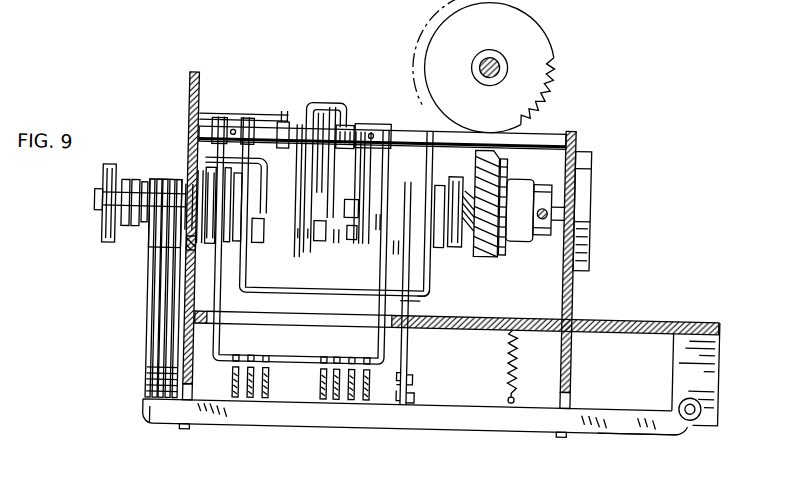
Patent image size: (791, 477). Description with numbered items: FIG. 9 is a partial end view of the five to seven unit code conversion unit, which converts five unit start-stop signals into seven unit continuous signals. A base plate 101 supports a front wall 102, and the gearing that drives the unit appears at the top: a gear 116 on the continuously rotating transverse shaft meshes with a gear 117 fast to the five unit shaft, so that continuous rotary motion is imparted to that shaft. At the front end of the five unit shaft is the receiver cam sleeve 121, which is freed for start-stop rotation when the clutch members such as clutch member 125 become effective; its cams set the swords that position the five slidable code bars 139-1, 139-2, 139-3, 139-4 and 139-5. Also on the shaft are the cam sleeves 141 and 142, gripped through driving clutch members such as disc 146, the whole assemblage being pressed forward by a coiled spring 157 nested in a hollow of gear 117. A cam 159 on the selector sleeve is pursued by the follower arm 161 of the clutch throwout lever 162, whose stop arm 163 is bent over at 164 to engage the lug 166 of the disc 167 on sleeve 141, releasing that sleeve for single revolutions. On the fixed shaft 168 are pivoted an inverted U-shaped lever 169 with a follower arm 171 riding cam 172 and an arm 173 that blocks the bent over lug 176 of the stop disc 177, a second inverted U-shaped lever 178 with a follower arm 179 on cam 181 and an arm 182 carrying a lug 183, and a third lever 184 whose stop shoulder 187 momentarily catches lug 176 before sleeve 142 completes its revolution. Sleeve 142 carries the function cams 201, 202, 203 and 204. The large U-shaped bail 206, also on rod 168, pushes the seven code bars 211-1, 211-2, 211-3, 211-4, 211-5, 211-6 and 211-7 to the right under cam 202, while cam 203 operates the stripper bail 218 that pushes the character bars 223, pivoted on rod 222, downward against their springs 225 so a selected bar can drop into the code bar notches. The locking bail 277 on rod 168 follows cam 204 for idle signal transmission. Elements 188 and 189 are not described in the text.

The base plate 101 is at (630, 311).
The front wall 102 is at (184, 90).
The gear 116 is at (548, 22).
The gear 117 is at (496, 257).
The receiver cam sleeve 121 is at (115, 165).
The clutch member 125 is at (94, 240).
The slidable code bar 139-1 is at (148, 329).
The slidable code bar 139-2 is at (156, 346).
The slidable code bar 139-3 is at (161, 364).
The slidable code bar 139-4 is at (167, 398).
The slidable code bar 139-5 is at (176, 398).
The cam sleeve 141 is at (301, 236).
The cam sleeve 142 is at (432, 254).
The driving clutch member 146 is at (457, 174).
The coiled spring 157 is at (460, 194).
The cam 159 is at (163, 243).
The follower arm 161 is at (188, 190).
The clutch throwout lever 162 is at (224, 112).
The stop arm 163 is at (283, 258).
The bent over portion 164 is at (257, 290).
The lug 166 is at (286, 246).
The disc 167 is at (305, 108).
The fixed shaft 168 is at (561, 125).
The inverted U-shaped lever 169 is at (325, 96).
The follower arm 171 is at (268, 185).
The cam 172 is at (318, 236).
The arm 173 is at (358, 170).
The bent over lug 176 is at (349, 236).
The stop disc 177 is at (374, 226).
The inverted U-shaped lever 178 is at (337, 106).
The follower arm 179 is at (311, 100).
The cam 181 is at (332, 240).
The arm 182 is at (341, 124).
The lug 183 is at (342, 196).
The third lever 184 is at (369, 125).
The stop shoulder 187 is at (439, 53).
The bearing 188 is at (276, 119).
The member 189 is at (350, 203).
The function cam 201 is at (362, 206).
The function cam 202 is at (396, 252).
The function cam 203 is at (430, 287).
The function cam 204 is at (504, 250).
The U-shaped bail 206 is at (300, 363).
The code bar 211-1 is at (237, 396).
The code bar 211-2 is at (252, 396).
The code bar 211-3 is at (325, 396).
The code bar 211-4 is at (338, 396).
The code bar 211-5 is at (353, 396).
The code bar 211-6 is at (368, 396).
The code bar 211-7 is at (410, 403).
The stripper bail 218 is at (413, 355).
The rod 222 is at (692, 409).
The character bar 223 is at (484, 425).
The spring 225 is at (520, 368).
The locking bail 277 is at (427, 296).